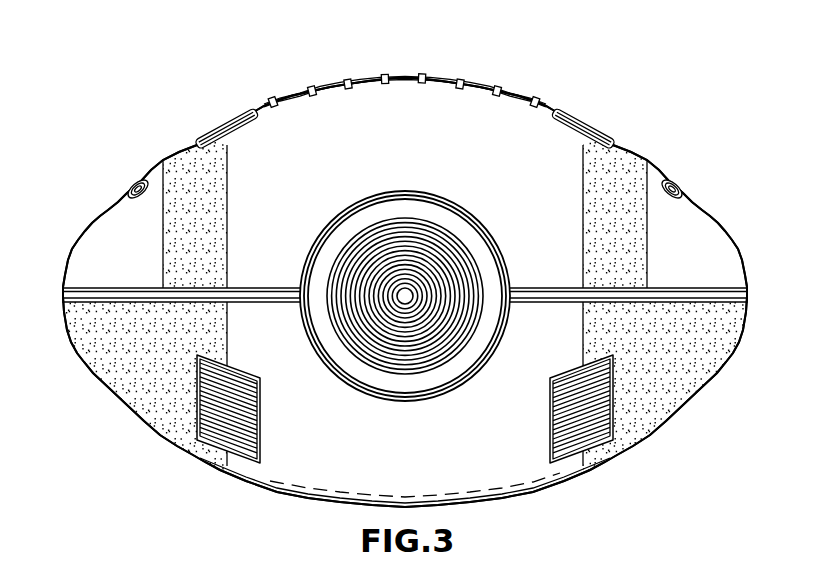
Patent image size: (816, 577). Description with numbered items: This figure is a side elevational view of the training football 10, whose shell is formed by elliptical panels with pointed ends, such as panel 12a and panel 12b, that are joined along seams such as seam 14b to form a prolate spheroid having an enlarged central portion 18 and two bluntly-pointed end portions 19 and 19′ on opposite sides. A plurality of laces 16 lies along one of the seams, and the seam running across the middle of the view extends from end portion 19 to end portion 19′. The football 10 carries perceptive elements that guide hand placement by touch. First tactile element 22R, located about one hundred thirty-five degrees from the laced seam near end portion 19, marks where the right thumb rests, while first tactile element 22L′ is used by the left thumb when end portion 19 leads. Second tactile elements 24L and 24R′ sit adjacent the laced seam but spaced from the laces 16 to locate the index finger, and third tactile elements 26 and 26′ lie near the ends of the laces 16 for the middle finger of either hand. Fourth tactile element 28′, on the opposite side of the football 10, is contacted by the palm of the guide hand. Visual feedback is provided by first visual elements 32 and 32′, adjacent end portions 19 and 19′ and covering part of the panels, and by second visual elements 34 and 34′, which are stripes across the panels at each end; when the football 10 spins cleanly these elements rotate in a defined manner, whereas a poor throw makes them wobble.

The football 10 is at (267, 80).
The panel 12a is at (375, 107).
The panel 12b is at (498, 478).
The seam 14b is at (717, 297).
The laces 16 is at (460, 82).
The central portion 18 is at (413, 464).
The end portion 19 is at (63, 299).
The end portion 19′ is at (748, 300).
The first tactile element 22R is at (243, 452).
The first tactile element 22L′ is at (565, 452).
The second tactile element 24L is at (133, 182).
The second tactile element 24R′ is at (672, 185).
The third tactile element 26 is at (220, 125).
The third tactile element 26′ is at (578, 123).
The fourth tactile element 28′ is at (405, 365).
The first visual element 32 is at (148, 407).
The first visual element 32′ is at (690, 380).
The second visual element 34 is at (187, 160).
The second visual element 34′ is at (595, 198).